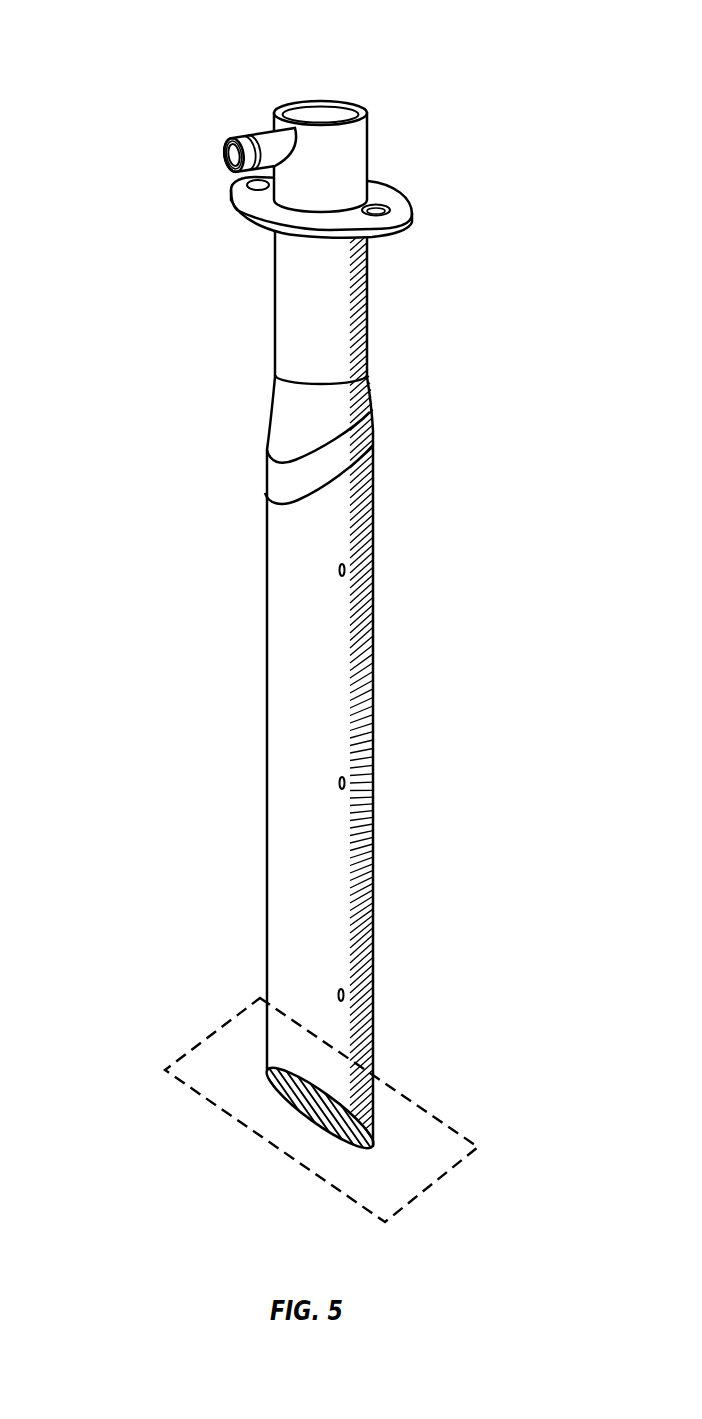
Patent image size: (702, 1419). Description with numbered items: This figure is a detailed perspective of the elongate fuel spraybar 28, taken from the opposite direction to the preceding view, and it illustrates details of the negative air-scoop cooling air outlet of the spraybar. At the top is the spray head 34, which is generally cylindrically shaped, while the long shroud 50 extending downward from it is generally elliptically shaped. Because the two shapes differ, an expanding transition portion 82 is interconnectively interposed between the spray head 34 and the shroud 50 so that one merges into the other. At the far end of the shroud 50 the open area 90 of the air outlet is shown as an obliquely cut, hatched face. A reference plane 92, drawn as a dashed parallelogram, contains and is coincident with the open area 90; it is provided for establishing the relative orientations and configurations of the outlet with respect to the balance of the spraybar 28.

The spraybar 28 is at (315, 611).
The spray head 34 is at (430, 197).
The shroud 50 is at (282, 674).
The expanding transition portion 82 is at (392, 392).
The open area 90 is at (352, 1128).
The reference plane 92 is at (203, 1037).